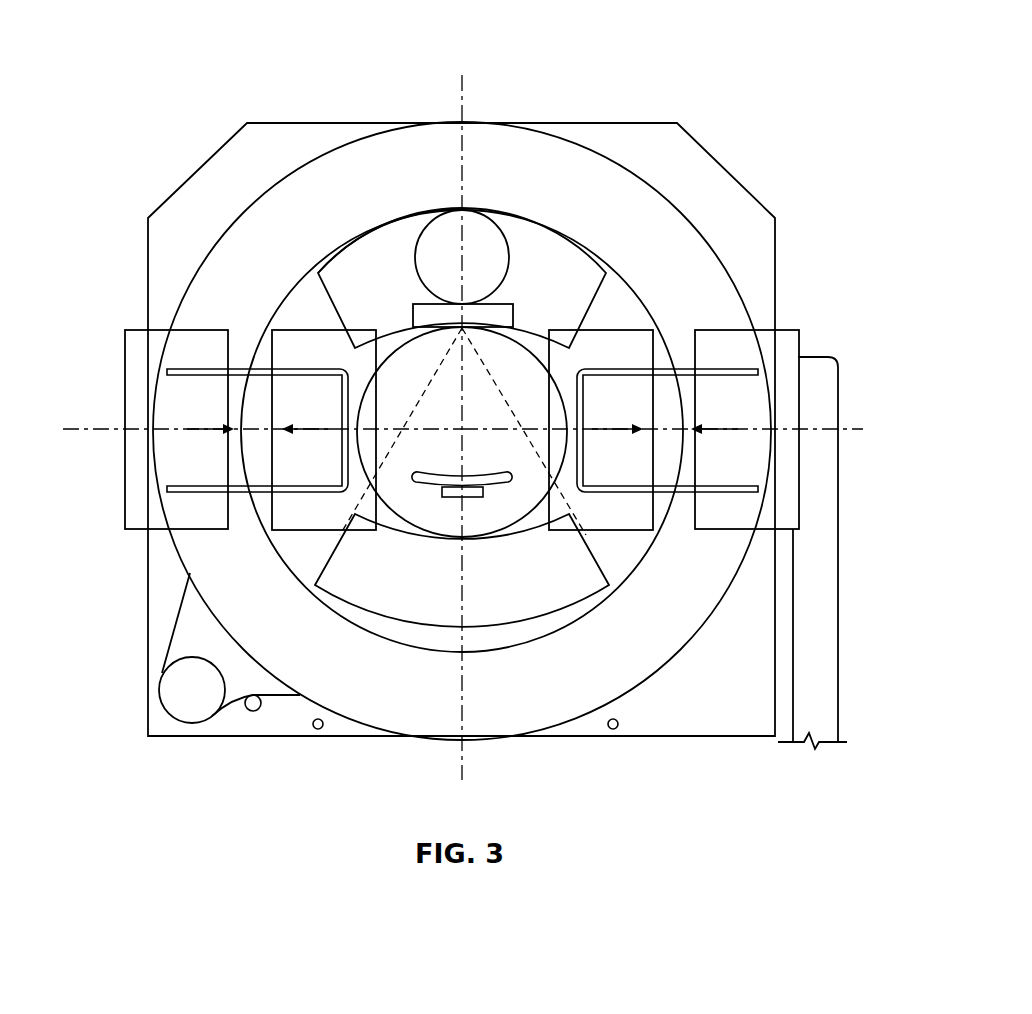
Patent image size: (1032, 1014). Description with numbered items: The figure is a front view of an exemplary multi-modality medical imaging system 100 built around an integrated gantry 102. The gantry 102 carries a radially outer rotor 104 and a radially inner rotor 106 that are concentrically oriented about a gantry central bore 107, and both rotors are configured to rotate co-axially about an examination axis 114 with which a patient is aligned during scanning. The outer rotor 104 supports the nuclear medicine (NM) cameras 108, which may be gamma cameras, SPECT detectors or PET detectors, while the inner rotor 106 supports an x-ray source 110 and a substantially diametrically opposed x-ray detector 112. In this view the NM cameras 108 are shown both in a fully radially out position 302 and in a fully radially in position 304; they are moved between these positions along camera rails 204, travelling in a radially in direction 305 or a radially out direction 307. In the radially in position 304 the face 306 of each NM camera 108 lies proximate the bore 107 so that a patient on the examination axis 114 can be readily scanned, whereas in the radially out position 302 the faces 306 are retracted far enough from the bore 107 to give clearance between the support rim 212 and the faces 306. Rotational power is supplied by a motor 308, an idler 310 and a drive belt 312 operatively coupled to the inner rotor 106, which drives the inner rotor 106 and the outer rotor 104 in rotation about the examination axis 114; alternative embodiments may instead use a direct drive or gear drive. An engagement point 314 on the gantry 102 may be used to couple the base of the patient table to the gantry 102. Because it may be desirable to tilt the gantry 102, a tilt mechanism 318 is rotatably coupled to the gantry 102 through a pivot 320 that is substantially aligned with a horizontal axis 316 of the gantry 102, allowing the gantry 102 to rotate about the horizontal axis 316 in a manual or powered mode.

The multi-modality medical imaging system 100 is at (150, 48).
The integrated gantry 102 is at (733, 152).
The radially outer rotor 104 is at (703, 230).
The radially inner rotor 106 is at (552, 230).
The gantry central bore 107 is at (460, 424).
The nuclear medicine cameras 108 is at (135, 355).
The x-ray source 110 is at (472, 222).
The x-ray detector 112 is at (528, 588).
The examination axis 114 is at (465, 434).
The camera rails 204 is at (255, 368).
The support rim 212 is at (373, 228).
The fully radially out position 302 is at (157, 445).
The fully radially in position 304 is at (285, 522).
The radially in direction 305 is at (203, 431).
The face 306 is at (378, 398).
The radially out direction 307 is at (313, 432).
The motor 308 is at (172, 698).
The idler 310 is at (248, 713).
The drive belt 312 is at (170, 638).
The engagement point 314 is at (318, 731).
The horizontal axis 316 is at (92, 428).
The tilt mechanism 318 is at (825, 635).
The pivot 320 is at (850, 427).